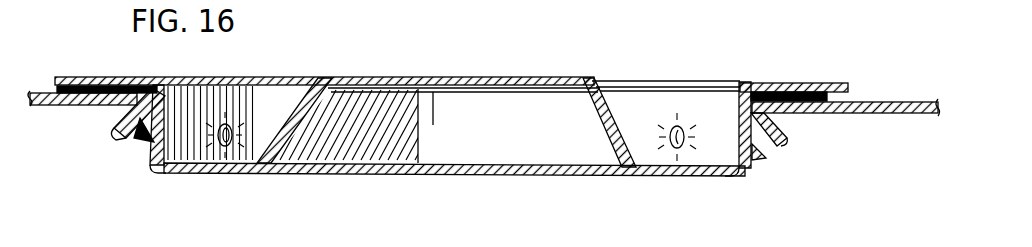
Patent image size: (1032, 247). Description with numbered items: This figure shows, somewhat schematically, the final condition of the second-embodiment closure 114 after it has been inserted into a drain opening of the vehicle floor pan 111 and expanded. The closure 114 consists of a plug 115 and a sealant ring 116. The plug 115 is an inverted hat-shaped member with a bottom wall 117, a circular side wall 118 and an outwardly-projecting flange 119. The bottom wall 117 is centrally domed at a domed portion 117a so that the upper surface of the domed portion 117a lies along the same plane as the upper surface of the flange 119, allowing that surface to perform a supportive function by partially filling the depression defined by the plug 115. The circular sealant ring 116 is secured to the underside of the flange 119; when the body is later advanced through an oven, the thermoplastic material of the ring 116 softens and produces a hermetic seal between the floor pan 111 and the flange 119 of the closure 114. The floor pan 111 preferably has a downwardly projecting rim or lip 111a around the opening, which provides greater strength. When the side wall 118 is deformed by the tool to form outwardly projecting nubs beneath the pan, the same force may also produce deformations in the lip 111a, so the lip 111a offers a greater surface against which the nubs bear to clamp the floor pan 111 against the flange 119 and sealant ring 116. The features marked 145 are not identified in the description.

The floor pan 111 is at (897, 103).
The downwardly projecting rim or lip 111a is at (777, 127).
The closure 114 is at (350, 72).
The plug 115 is at (218, 170).
The sealant ring 116 is at (787, 82).
The bottom wall 117 is at (670, 177).
The domed portion 117a is at (518, 90).
The circular side wall 118 is at (758, 160).
The outwardly-projecting flange 119 is at (830, 86).
The lamp / snap element 145 is at (238, 122).